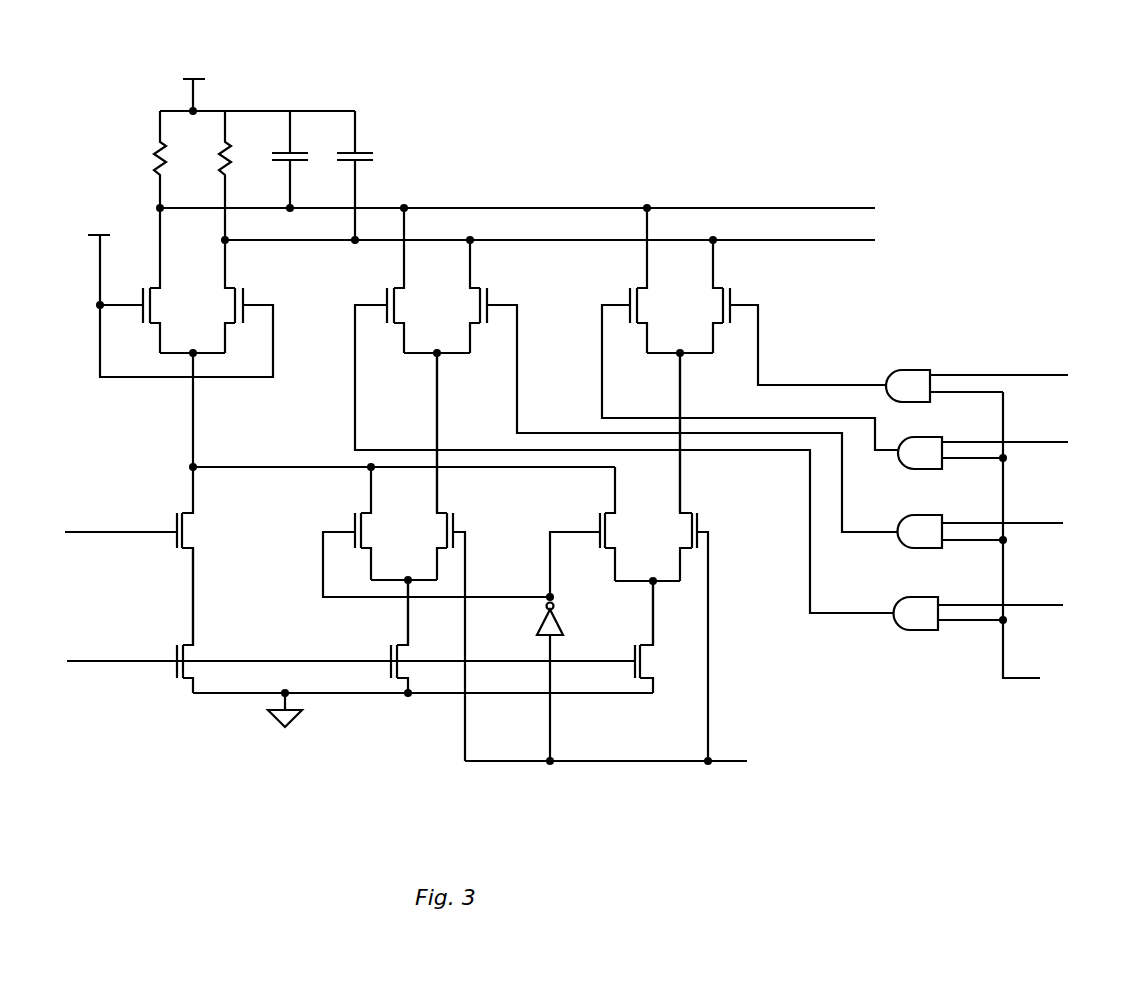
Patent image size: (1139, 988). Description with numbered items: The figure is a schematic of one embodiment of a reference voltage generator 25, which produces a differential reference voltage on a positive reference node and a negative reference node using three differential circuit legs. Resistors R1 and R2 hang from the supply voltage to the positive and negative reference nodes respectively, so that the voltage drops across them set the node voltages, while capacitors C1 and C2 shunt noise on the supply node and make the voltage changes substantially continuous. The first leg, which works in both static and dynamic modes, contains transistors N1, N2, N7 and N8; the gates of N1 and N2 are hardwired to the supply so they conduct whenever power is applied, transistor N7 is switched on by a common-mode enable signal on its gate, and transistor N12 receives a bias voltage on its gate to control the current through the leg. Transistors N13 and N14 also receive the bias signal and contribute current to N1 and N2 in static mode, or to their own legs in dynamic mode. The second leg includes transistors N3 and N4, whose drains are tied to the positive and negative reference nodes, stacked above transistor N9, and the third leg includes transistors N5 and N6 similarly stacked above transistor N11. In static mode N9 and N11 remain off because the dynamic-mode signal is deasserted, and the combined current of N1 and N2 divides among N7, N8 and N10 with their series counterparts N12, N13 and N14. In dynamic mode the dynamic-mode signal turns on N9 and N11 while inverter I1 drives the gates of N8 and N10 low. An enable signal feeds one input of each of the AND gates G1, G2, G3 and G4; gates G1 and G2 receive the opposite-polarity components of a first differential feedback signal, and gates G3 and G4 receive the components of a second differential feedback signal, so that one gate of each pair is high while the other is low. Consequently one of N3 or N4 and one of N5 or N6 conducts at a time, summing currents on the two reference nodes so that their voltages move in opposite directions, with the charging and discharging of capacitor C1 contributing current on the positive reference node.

The reference voltage generator 25 is at (597, 142).
The resistor R1 is at (147, 159).
The resistor R2 is at (212, 175).
The capacitor C1 is at (304, 159).
The capacitor C2 is at (369, 175).
The transistor N1 is at (165, 280).
The transistor N2 is at (224, 296).
The transistor N3 is at (624, 410).
The transistor N4 is at (673, 386).
The transistor N5 is at (750, 329).
The transistor N6 is at (789, 312).
The transistor N7 is at (142, 556).
The transistor N8 is at (436, 532).
The transistor N9 is at (440, 557).
The transistor N10 is at (599, 532).
The transistor N11 is at (681, 557).
The transistor N12 is at (173, 620).
The transistor N13 is at (388, 636).
The transistor N14 is at (661, 637).
The inverter I1 is at (561, 681).
The AND gate G1 is at (969, 375).
The AND gate G2 is at (975, 444).
The AND gate G3 is at (969, 523).
The AND gate G4 is at (967, 605).